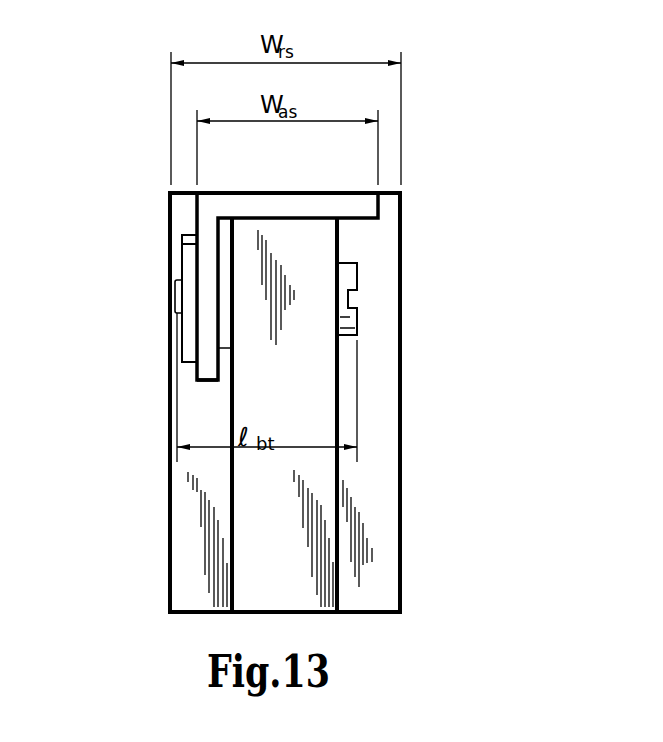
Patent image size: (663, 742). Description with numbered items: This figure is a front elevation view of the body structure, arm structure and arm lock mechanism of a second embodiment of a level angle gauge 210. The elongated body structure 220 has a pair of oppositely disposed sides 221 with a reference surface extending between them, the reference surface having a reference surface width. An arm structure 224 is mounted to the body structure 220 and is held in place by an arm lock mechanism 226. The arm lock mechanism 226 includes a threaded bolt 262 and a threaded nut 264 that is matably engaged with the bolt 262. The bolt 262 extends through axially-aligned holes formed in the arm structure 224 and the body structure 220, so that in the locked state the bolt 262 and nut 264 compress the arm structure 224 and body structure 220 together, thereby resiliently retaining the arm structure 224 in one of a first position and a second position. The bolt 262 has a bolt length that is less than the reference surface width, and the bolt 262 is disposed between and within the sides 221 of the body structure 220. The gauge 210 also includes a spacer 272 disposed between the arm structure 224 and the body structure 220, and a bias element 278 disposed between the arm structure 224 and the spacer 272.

The level angle gauge 210 is at (458, 134).
The elongated body structure 220 is at (401, 580).
The sides 221 is at (401, 462).
The arm structure 224 is at (197, 214).
The arm lock mechanism 226 is at (176, 298).
The threaded bolt 262 is at (357, 320).
The threaded nut 264 is at (182, 258).
The spacer 272 is at (226, 365).
The bias element 278 is at (207, 385).